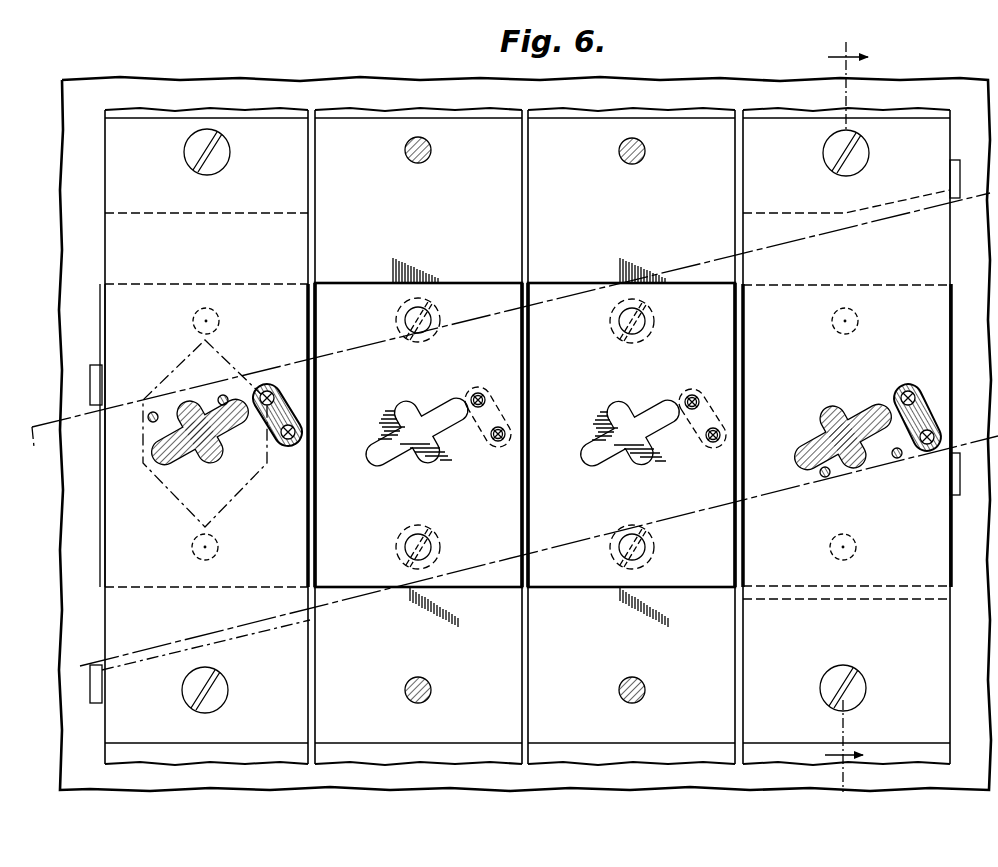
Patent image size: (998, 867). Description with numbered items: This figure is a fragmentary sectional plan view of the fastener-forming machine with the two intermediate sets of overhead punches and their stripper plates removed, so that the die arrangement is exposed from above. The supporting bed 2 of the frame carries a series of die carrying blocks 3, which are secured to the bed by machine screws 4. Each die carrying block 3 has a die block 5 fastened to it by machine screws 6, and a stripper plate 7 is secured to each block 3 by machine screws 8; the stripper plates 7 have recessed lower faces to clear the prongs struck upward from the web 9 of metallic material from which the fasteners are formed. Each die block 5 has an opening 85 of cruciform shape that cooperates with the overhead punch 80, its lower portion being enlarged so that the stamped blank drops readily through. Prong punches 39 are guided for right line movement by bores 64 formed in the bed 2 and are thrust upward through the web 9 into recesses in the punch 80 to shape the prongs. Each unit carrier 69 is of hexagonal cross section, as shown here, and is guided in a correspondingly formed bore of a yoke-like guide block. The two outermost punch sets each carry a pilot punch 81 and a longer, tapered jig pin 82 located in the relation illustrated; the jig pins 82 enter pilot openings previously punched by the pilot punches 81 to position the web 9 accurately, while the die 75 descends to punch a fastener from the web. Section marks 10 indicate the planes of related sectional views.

The supporting bed 2 is at (62, 297).
The die carrying block 3 is at (326, 113).
The machine screw 4 is at (845, 416).
The die block 5 is at (293, 287).
The machine screw 6 is at (219, 316).
The stripper plate 7 is at (110, 188).
The machine screw 8 is at (222, 163).
The web 9 is at (48, 425).
The section line 10 is at (900, 383).
The prong punch 39 is at (271, 396).
The bore 64 is at (482, 405).
The unit carrier 69 is at (180, 512).
The die 75 is at (207, 460).
The punch 80 is at (290, 446).
The pilot punch 81 is at (221, 395).
The jig pin 82 is at (147, 418).
The opening 85 is at (440, 410).